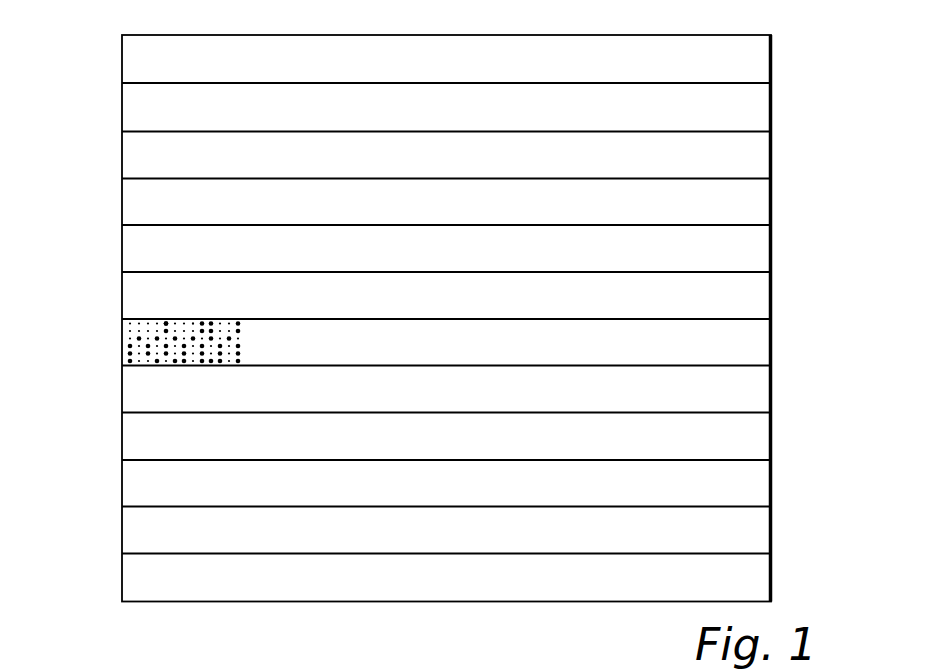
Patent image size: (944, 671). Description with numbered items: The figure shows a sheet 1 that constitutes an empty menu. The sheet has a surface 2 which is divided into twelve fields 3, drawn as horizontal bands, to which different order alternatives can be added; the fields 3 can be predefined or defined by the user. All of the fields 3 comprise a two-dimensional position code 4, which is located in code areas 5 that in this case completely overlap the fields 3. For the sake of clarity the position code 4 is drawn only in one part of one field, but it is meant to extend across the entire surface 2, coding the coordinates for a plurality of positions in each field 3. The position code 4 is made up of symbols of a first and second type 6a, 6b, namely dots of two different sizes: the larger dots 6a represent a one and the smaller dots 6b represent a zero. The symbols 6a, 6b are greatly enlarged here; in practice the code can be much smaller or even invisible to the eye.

The sheet 1 is at (780, 196).
The surface 2 is at (137, 102).
The fields 3 is at (758, 352).
The two-dimensional position code 4 is at (152, 333).
The code areas 5 is at (122, 346).
The symbols of a first type 6a is at (164, 323).
The symbols of a second type 6b is at (192, 323).